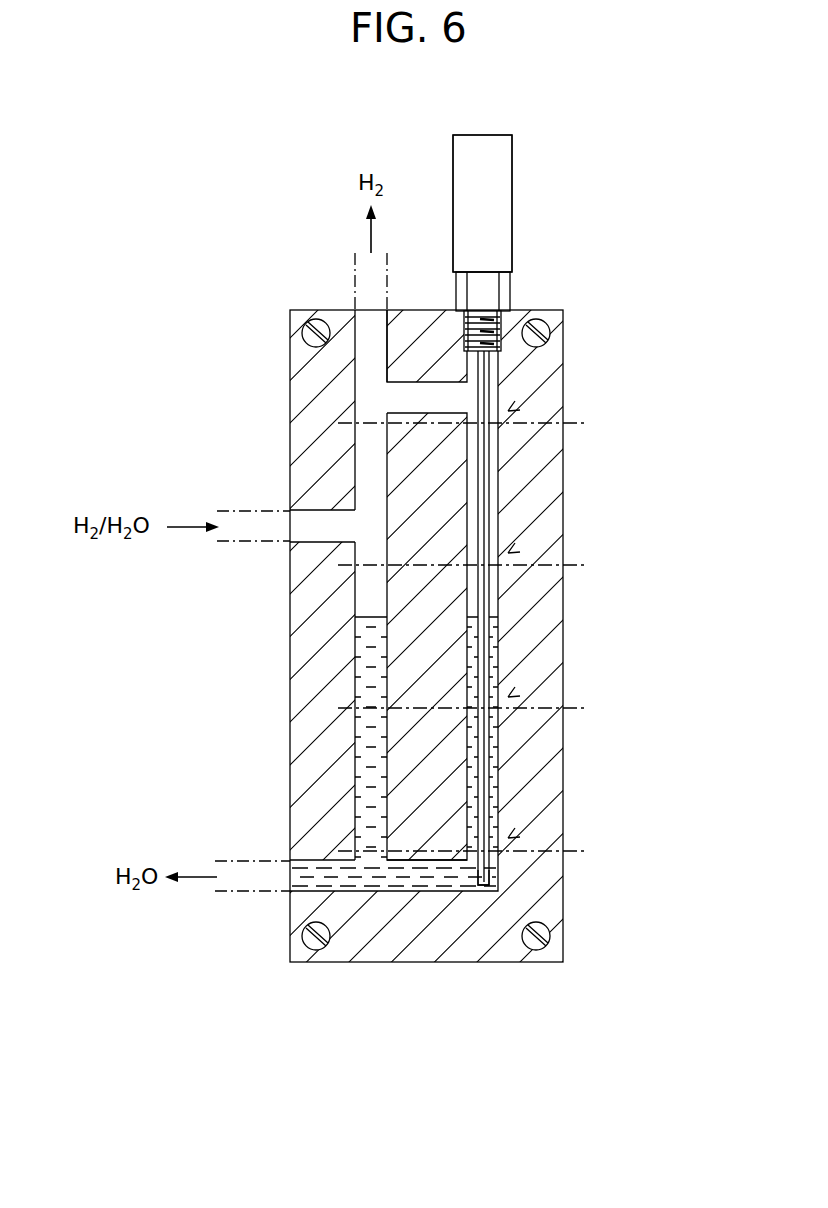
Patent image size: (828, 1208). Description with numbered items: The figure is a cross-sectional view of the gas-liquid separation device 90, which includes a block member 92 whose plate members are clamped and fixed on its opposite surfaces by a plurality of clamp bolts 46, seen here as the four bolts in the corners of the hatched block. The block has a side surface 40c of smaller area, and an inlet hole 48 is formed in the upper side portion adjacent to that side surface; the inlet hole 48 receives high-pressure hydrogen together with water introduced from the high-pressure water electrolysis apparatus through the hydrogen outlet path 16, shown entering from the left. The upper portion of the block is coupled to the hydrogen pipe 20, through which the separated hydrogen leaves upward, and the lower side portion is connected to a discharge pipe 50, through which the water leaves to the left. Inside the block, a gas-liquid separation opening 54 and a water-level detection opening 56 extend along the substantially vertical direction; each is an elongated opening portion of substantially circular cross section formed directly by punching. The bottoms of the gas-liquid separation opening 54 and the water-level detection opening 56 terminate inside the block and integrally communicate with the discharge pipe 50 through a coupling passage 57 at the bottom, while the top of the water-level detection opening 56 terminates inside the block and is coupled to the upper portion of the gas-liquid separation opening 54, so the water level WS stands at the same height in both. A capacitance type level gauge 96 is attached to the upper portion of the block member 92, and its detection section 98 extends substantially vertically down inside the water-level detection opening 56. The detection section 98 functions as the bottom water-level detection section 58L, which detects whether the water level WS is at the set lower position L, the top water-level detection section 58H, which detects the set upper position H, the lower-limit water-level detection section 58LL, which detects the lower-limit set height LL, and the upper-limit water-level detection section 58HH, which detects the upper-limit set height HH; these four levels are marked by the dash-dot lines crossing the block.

The block member 92 is at (476, 106).
The gas-liquid separation device 90 is at (518, 106).
The capacitance type level gauge 96 is at (523, 220).
The clamp bolts 46 is at (542, 338).
The hydrogen pipe 20 is at (355, 276).
The inlet hole 48 is at (313, 512).
The hydrogen outlet path 16 is at (222, 543).
The water level WS is at (473, 615).
The gas-liquid separation opening 54 is at (368, 665).
The side surface 40c is at (290, 703).
The discharge pipe 50 is at (252, 861).
The coupling passage 57 is at (370, 890).
The water-level detection opening 56 is at (470, 497).
The detection section 98 is at (484, 860).
The upper-limit water-level detection section 58HH is at (508, 411).
The top water-level detection section 58H is at (508, 553).
The bottom water-level detection section 58L is at (508, 697).
The lower-limit water-level detection section 58LL is at (508, 838).
The upper-limit set height HH is at (482, 423).
The set upper position H is at (474, 565).
The set lower position L is at (471, 708).
The lower-limit set height LL is at (477, 851).